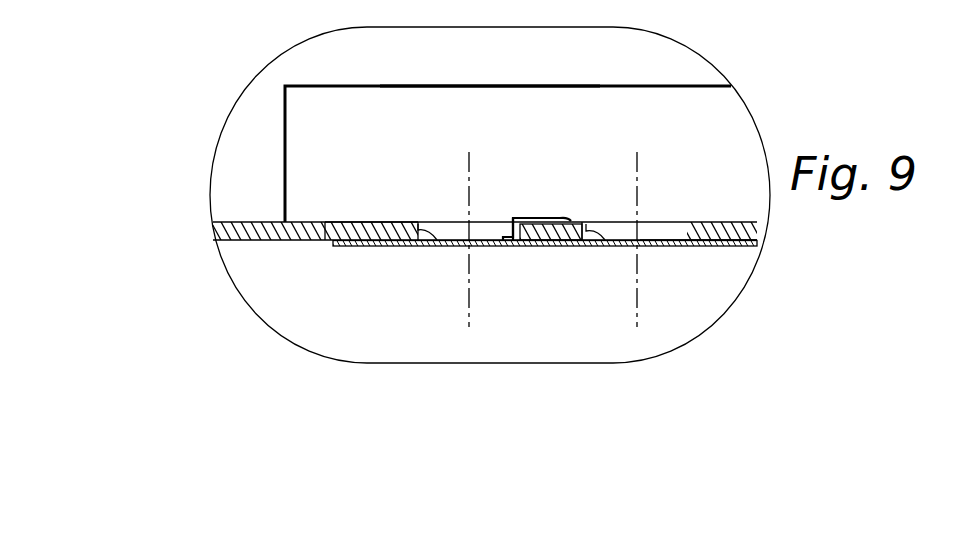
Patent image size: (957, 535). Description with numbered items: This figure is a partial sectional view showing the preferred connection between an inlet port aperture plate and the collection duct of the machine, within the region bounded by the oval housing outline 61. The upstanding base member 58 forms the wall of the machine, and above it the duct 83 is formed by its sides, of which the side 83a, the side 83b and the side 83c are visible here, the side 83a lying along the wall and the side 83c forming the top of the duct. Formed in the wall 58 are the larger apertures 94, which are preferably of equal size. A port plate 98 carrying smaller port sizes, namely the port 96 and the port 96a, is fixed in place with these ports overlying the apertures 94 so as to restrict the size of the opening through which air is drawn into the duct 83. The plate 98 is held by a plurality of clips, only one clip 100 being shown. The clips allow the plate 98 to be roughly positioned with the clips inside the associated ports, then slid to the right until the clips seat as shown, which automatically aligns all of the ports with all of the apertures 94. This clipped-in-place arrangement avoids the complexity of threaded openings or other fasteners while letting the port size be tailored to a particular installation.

The upstanding base member 58 is at (282, 241).
The housing 61 is at (905, 2).
The duct 83 is at (423, 105).
The side of duct 83a is at (318, 222).
The side of duct 83b is at (524, 139).
The side of duct 83c is at (478, 86).
The larger apertures 94 is at (440, 245).
The port 96 is at (488, 246).
The port 96a is at (652, 246).
The port plate 98 is at (557, 243).
The clip 100 is at (545, 218).